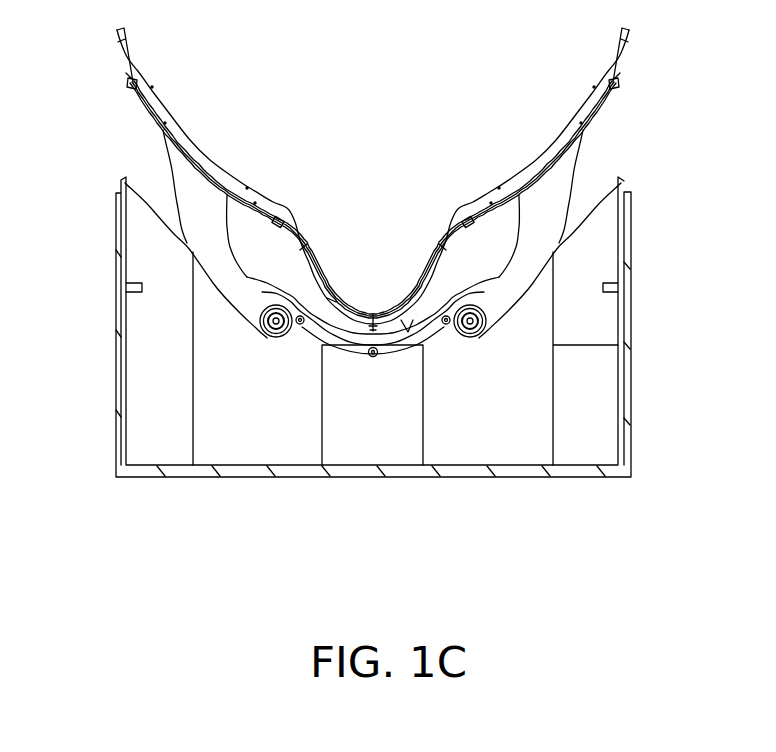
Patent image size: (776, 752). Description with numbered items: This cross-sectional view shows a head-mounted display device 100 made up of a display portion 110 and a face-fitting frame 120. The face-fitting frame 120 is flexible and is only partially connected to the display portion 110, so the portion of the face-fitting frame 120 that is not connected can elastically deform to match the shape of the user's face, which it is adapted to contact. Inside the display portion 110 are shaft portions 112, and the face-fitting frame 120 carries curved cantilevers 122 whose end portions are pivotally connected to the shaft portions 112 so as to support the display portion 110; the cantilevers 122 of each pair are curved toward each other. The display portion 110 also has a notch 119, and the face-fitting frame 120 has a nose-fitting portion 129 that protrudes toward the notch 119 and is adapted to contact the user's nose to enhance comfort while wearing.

The head-mounted display device 100 is at (763, 540).
The display portion 110 is at (600, 312).
The shaft portions 112 is at (275, 322).
The notch 119 is at (407, 320).
The face-fitting frame 120 is at (210, 168).
The cantilevers 122 is at (192, 203).
The nose-fitting portion 129 is at (331, 300).